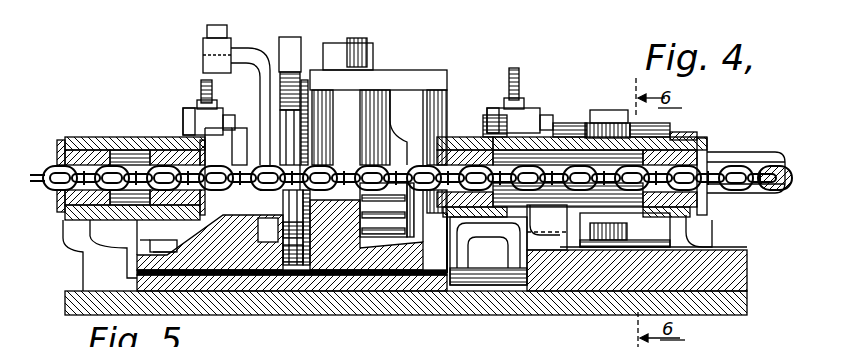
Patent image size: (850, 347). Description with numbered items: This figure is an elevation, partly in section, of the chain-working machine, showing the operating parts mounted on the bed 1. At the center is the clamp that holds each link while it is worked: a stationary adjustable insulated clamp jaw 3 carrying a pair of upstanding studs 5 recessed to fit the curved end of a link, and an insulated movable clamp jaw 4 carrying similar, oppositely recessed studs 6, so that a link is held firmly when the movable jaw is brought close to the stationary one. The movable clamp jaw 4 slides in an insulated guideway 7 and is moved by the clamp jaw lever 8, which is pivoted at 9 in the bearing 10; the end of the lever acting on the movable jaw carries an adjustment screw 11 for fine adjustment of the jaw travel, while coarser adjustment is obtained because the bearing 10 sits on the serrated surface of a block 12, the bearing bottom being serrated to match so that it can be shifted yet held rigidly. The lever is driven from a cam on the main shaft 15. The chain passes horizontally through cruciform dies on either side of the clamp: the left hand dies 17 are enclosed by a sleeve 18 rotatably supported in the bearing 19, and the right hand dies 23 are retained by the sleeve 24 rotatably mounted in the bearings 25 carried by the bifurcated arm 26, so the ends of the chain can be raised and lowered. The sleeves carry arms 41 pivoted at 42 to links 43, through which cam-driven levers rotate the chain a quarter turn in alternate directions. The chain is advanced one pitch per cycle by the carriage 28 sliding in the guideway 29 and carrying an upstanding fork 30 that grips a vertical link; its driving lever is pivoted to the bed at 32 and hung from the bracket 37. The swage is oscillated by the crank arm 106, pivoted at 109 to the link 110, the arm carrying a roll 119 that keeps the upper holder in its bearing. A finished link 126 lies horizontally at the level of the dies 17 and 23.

The bed 1 is at (735, 310).
The stationary adjustable insulated clamp jaw 3 is at (210, 240).
The insulated movable clamp jaw 4 is at (366, 235).
The upstanding studs 5 is at (245, 140).
The studs 6 is at (308, 160).
The insulated guideway 7 is at (303, 282).
The clamp jaw lever 8 is at (387, 97).
The pivot 9 is at (369, 50).
The bearing 10 is at (437, 72).
The adjustment screw 11 is at (406, 232).
The block 12 is at (437, 268).
The main shaft 15 is at (770, 153).
The left hand cruciform dies 17 is at (61, 138).
The sleeve 18 is at (78, 137).
The bearing 19 is at (111, 148).
The right hand cruciform dies 23 is at (458, 149).
The sleeve 24 is at (570, 150).
The bearings 25 is at (672, 130).
The bifurcated arm 26 is at (481, 137).
The carriage 28 is at (750, 270).
The guideway 29 is at (493, 282).
The upstanding fork 30 is at (547, 227).
The pivot 32 is at (602, 108).
The bracket 37 is at (608, 115).
The arms 41 is at (190, 110).
The pivots 42 is at (229, 116).
The links 43 is at (201, 86).
The lever or crank arm 106 is at (272, 76).
The pivot 109 is at (246, 50).
The link 110 is at (203, 33).
The roll 119 is at (355, 43).
The link 126 is at (312, 120).